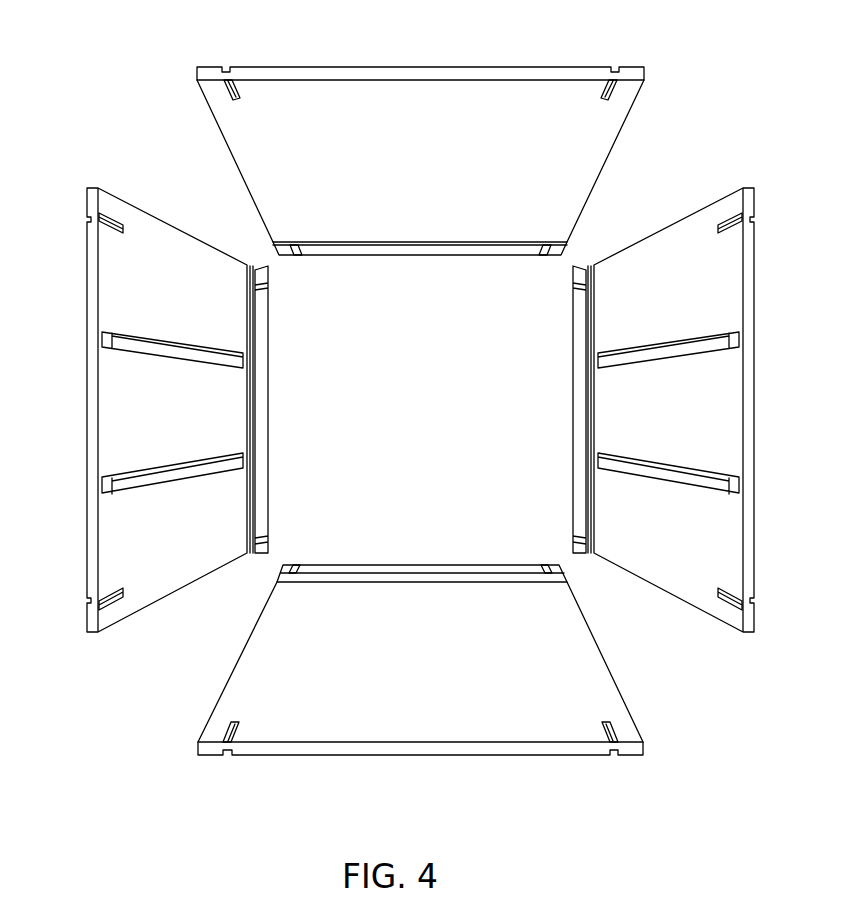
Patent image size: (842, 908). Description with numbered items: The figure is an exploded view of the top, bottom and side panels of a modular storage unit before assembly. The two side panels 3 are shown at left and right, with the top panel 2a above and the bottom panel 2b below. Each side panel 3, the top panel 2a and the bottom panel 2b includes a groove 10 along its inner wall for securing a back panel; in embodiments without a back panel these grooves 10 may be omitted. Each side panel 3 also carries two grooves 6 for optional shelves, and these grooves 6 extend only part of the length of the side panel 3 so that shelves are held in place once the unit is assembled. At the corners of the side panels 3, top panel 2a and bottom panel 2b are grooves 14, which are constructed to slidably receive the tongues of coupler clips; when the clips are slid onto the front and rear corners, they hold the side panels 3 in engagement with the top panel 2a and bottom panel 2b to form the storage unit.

The top panel 2a is at (563, 161).
The bottom panel 2b is at (565, 662).
The side panel 3 is at (152, 259).
The groove for optional shelves 6 is at (110, 337).
The groove for securing the back panel 10 is at (275, 246).
The groove for coupler clip tongues 14 is at (237, 93).